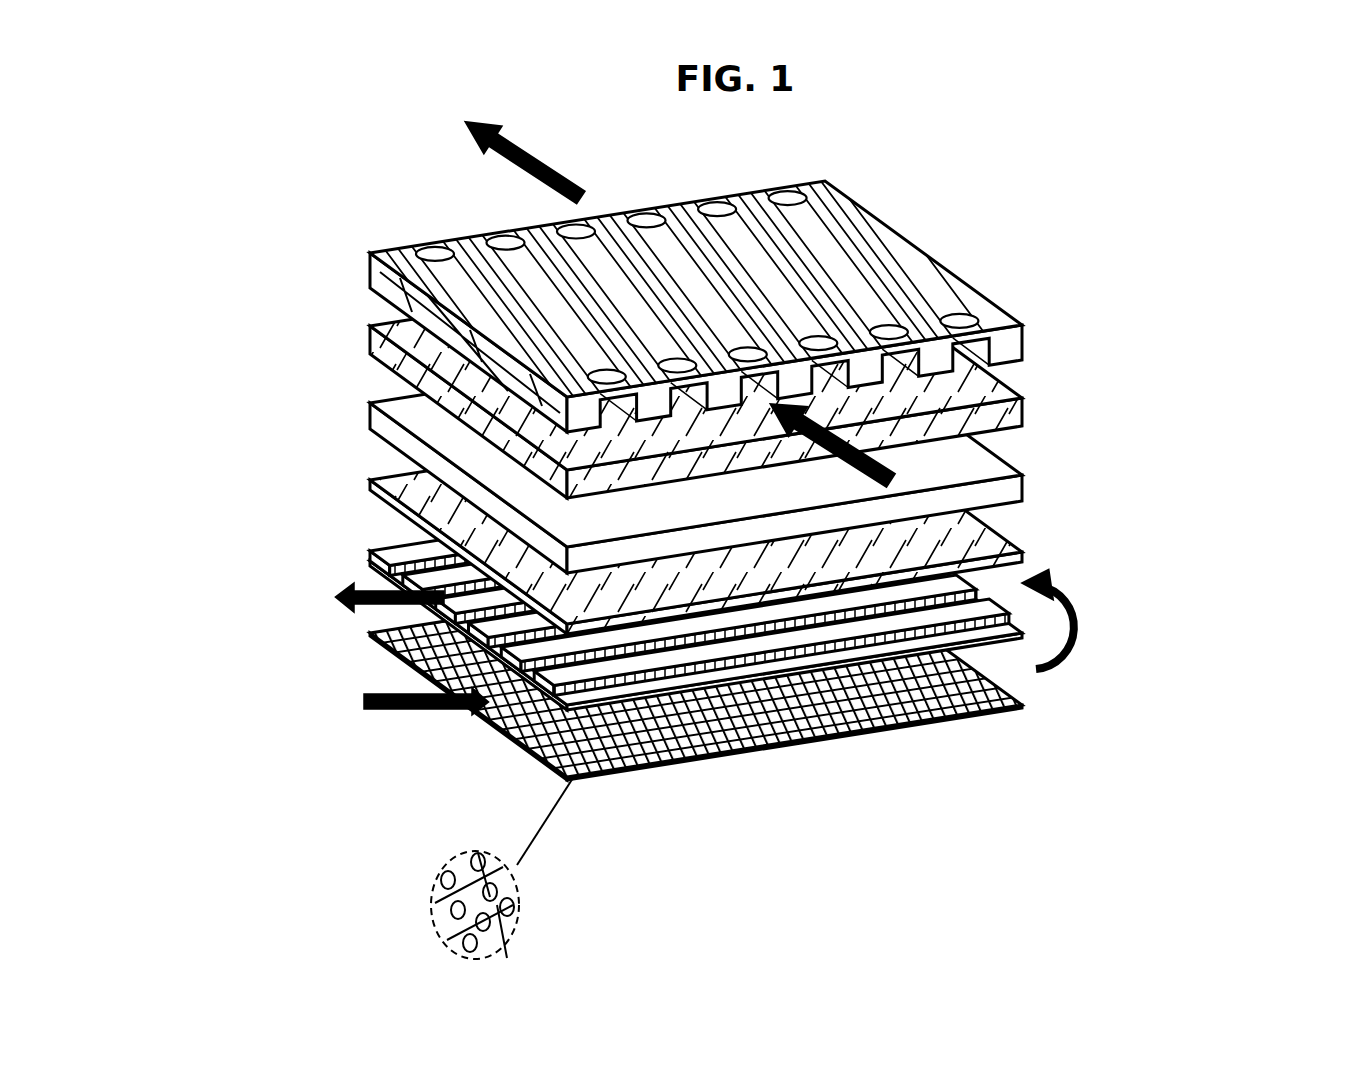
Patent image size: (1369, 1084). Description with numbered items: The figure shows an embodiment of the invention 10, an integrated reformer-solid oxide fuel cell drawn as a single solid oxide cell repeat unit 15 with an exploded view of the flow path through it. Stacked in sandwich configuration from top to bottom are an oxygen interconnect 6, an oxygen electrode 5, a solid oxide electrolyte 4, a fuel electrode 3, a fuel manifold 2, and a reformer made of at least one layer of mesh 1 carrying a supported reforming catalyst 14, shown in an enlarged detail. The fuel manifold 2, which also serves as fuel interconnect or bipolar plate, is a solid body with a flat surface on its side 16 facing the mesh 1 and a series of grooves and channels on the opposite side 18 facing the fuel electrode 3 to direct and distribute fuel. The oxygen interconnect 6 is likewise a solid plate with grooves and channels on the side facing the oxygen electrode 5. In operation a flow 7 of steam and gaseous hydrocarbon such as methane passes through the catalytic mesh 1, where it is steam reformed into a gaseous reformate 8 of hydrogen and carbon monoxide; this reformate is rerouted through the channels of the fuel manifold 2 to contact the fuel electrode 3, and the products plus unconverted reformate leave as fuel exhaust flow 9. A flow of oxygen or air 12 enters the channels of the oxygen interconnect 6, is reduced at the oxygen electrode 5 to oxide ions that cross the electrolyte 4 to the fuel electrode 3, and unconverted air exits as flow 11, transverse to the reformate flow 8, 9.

The layer of mesh 1 is at (808, 712).
The fuel manifold 2 is at (928, 650).
The fuel electrode 3 is at (1032, 559).
The solid oxide electrolyte 4 is at (1025, 478).
The oxygen electrode 5 is at (1025, 409).
The oxygen interconnect 6 is at (868, 257).
The flow of steam and gaseous hydrocarbon fuel 7 is at (407, 723).
The gaseous reformate 8 is at (1090, 640).
The fuel exhaust flow 9 is at (373, 597).
The integrated reformer-solid oxide fuel cell 10 is at (743, 471).
The unconverted oxygen or air exit flow 11 is at (443, 128).
The flow of oxygen or air 12 is at (830, 457).
The reforming catalyst 14 is at (455, 845).
The single solid oxide cell (cell repeat unit) 15 is at (293, 258).
The flat-surface side of fuel manifold 16 is at (707, 697).
The grooved side of fuel manifold 18 is at (883, 652).